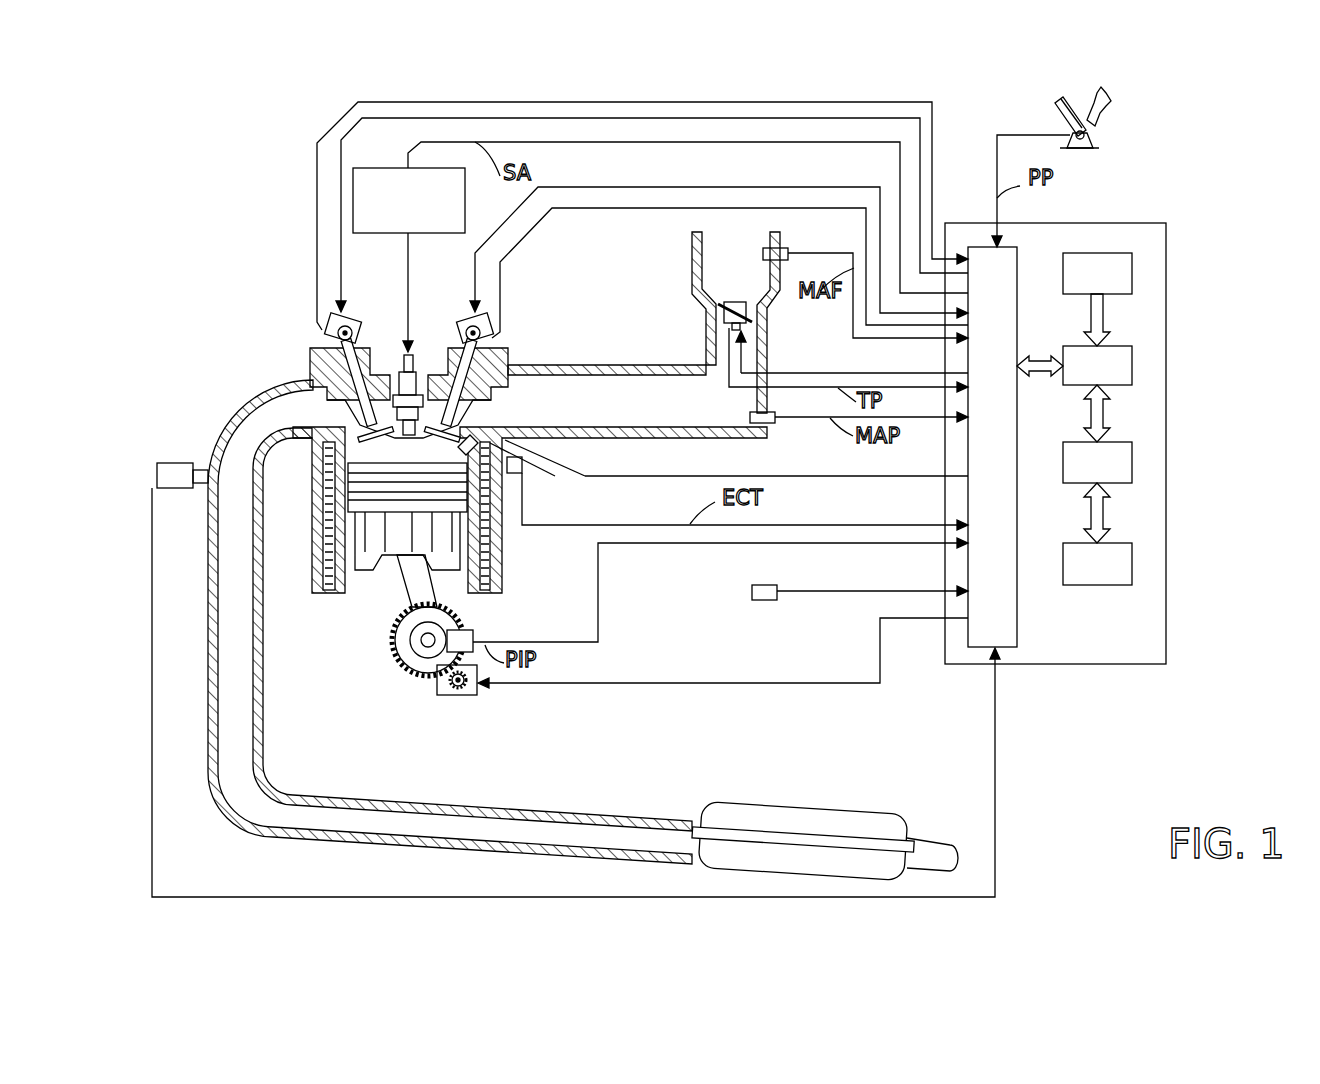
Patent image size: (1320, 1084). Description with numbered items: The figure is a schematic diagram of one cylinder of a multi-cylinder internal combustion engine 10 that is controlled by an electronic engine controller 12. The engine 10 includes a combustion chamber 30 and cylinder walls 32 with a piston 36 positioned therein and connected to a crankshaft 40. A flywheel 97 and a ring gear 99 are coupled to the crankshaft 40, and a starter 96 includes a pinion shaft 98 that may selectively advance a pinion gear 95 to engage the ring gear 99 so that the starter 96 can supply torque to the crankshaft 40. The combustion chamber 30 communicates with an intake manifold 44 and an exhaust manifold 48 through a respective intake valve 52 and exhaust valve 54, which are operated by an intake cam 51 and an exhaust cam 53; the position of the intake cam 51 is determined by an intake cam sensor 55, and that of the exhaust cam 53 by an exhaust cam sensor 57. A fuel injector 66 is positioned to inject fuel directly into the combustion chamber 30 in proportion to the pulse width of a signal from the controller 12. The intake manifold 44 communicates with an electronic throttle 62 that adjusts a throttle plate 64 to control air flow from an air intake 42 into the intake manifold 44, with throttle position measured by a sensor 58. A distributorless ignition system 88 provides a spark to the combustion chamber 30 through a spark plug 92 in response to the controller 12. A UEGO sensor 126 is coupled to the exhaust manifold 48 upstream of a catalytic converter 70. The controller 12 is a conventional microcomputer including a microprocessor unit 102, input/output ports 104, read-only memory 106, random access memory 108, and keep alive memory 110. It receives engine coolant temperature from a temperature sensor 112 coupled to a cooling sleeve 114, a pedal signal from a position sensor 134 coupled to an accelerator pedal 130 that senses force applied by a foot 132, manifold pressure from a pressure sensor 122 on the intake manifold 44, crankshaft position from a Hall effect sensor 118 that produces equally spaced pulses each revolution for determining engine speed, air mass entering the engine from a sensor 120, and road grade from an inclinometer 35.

The internal combustion engine 10 is at (243, 298).
The electronic engine controller 12 is at (1155, 224).
The combustion chamber 30 is at (407, 445).
The cylinder walls 32 is at (355, 585).
The inclinometer 35 is at (770, 600).
The piston 36 is at (395, 580).
The crankshaft 40 is at (412, 670).
The air intake 42 is at (750, 277).
The intake manifold 44 is at (686, 414).
The exhaust manifold 48 is at (294, 417).
The intake cam 51 is at (465, 318).
The intake valve 52 is at (447, 412).
The exhaust cam 53 is at (352, 318).
The exhaust valve 54 is at (363, 417).
The intake cam sensor 55 is at (487, 336).
The exhaust cam sensor 57 is at (331, 338).
The throttle position sensor 58 is at (712, 330).
The electronic throttle 62 is at (750, 313).
The throttle plate 64 is at (718, 305).
The fuel injector 66 is at (535, 462).
The catalytic converter 70 is at (712, 805).
The distributorless ignition system 88 is at (368, 168).
The spark plug 92 is at (411, 355).
The pinion gear 95 is at (462, 697).
The starter 96 is at (470, 690).
The flywheel 97 is at (402, 638).
The pinion shaft 98 is at (455, 693).
The ring gear 99 is at (427, 678).
The microprocessor unit 102 is at (1133, 363).
The input/output ports 104 is at (1020, 262).
The read-only memory 106 is at (1133, 270).
The random access memory 108 is at (1133, 460).
The keep alive memory 110 is at (1133, 560).
The temperature sensor 112 is at (518, 470).
The cooling sleeve 114 is at (502, 548).
The Hall effect sensor 118 is at (473, 632).
The air mass sensor 120 is at (782, 248).
The pressure sensor 122 is at (770, 423).
The Universal Exhaust Gas Oxygen sensor 126 is at (157, 466).
The accelerator pedal 130 is at (1060, 113).
The foot 132 is at (1110, 102).
The position sensor 134 is at (1100, 138).